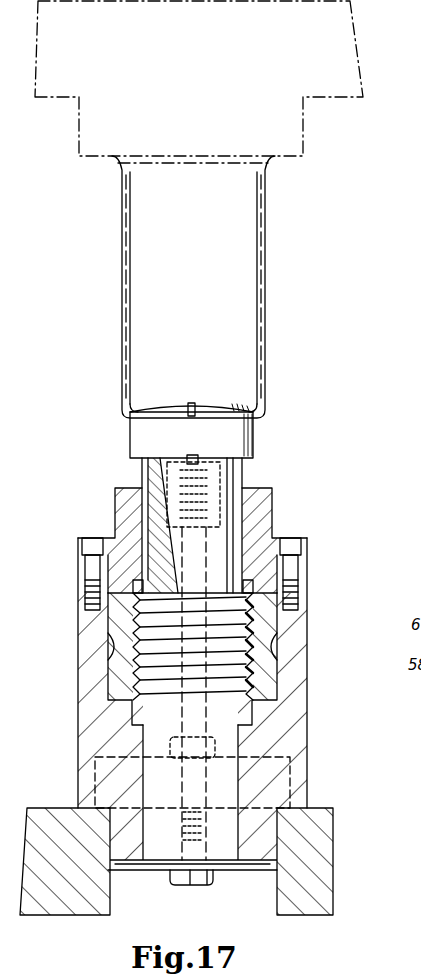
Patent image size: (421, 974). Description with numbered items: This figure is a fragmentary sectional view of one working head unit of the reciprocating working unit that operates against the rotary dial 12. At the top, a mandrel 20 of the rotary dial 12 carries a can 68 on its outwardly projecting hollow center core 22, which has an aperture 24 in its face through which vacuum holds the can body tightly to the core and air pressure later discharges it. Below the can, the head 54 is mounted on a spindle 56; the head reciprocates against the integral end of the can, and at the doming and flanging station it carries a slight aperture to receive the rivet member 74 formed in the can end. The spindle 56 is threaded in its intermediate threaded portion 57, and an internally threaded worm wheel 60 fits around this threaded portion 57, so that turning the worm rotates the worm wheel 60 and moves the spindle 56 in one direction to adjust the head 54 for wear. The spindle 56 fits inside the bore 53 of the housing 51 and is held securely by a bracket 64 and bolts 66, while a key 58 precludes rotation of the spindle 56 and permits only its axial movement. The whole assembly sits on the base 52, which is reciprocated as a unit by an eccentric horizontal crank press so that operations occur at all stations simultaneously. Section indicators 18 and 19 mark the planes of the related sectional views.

The rotary dial 12 is at (330, 39).
The mandrel 20 is at (311, 118).
The hollow center core 22 is at (143, 293).
The can 68 is at (265, 313).
The aperture 24 is at (233, 405).
The head 54 is at (138, 441).
The rivet member 74 is at (194, 416).
The spindle 56 is at (232, 480).
The key 58 is at (143, 505).
The bracket 64 is at (270, 556).
The bolts 66 is at (290, 571).
The worm wheel 60 is at (112, 682).
The threaded portion 57 is at (245, 680).
The housing 51 is at (305, 706).
The bore 53 is at (243, 740).
The base 52 is at (327, 881).
The section line 18- 18 is at (115, 527).
The section line 19- 19 is at (78, 643).